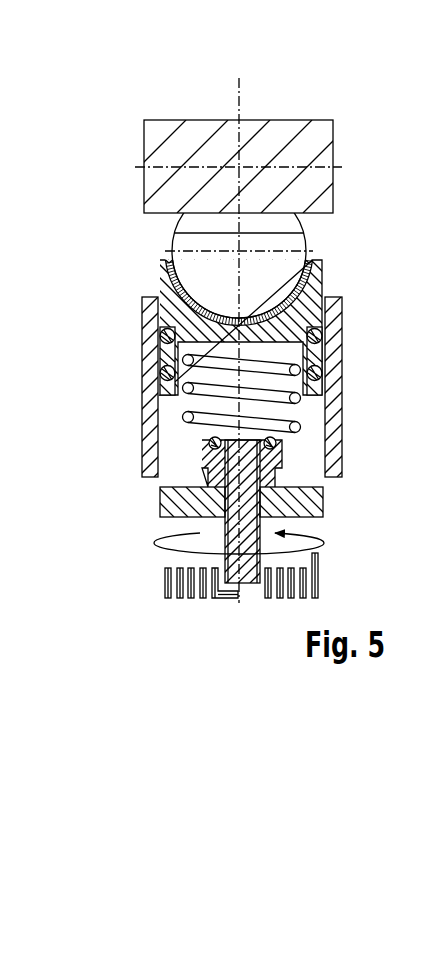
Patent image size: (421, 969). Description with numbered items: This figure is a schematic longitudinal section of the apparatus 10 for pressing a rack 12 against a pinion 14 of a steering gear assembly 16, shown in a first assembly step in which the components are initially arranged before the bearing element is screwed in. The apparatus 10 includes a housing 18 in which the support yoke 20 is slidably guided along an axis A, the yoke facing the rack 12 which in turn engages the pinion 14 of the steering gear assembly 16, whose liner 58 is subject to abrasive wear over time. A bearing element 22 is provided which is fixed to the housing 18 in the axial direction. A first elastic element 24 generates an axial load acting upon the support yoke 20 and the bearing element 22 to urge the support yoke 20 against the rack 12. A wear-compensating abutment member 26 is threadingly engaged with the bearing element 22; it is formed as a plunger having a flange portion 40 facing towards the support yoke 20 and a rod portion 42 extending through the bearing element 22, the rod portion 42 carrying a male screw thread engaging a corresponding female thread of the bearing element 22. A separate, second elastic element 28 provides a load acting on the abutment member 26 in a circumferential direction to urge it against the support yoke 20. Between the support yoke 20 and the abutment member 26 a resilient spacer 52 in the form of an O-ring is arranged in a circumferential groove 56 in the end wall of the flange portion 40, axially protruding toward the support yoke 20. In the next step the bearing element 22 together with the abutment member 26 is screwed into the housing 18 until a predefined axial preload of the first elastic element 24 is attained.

The apparatus 10 is at (147, 535).
The rack 12 is at (297, 224).
The pinion 14 is at (288, 118).
The steering gear assembly 16 is at (155, 104).
The housing 18 is at (148, 322).
The support yoke 20 is at (160, 283).
The bearing element 22 is at (310, 505).
The first elastic element 24 is at (301, 430).
The wear-compensating abutment member 26 is at (229, 511).
The second elastic element 28 is at (318, 580).
The flange portion 40 is at (283, 461).
The rod portion 42 is at (226, 503).
The resilient spacer 52 is at (170, 439).
The circumferential groove 56 is at (270, 443).
The liner 58 is at (318, 272).
The axis A is at (238, 90).